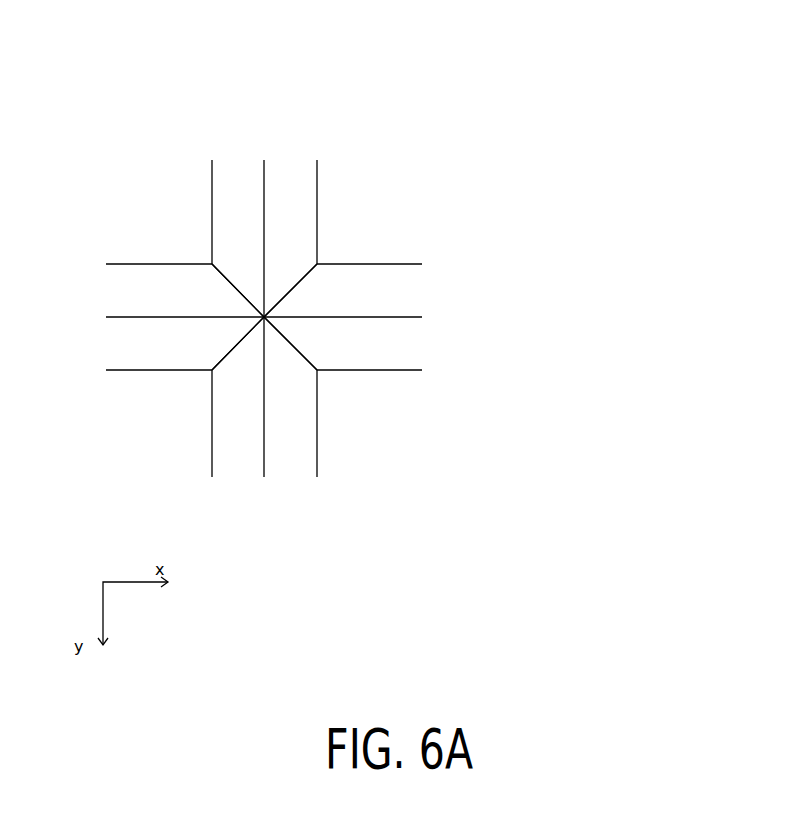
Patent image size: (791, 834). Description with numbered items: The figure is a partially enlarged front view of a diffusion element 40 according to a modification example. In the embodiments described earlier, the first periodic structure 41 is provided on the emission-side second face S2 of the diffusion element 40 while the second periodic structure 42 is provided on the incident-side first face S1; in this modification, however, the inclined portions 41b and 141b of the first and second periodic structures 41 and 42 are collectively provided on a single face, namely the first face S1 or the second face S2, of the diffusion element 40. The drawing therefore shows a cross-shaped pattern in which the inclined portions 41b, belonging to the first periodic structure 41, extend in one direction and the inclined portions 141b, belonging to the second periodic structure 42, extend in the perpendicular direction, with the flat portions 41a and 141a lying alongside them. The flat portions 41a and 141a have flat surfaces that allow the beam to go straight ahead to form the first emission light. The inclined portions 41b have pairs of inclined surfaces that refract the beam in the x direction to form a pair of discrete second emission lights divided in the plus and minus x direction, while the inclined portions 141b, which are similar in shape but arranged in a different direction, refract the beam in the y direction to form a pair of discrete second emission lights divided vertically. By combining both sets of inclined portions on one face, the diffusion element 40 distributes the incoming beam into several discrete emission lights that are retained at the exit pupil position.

The diffusion element 40 is at (347, 97).
The first periodic structure 41 is at (264, 318).
The flat portions 41a is at (165, 217).
The inclined portions 41b is at (317, 152).
The flat portions 141a is at (264, 317).
The inclined portions 141b is at (436, 264).
The second periodic structure 42 is at (220, 317).
The first face S1 is at (417, 215).
The second face S2 is at (264, 317).